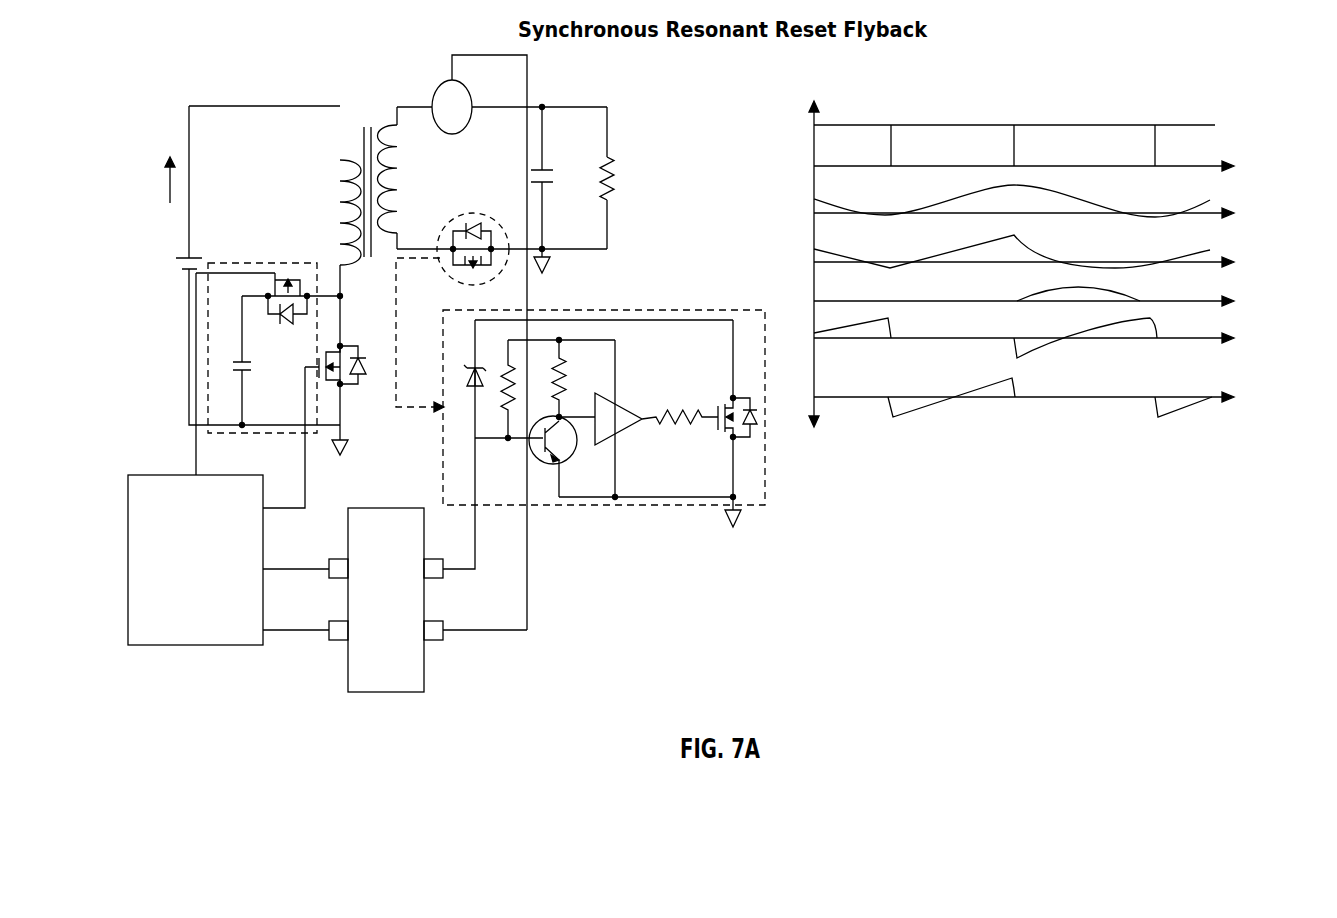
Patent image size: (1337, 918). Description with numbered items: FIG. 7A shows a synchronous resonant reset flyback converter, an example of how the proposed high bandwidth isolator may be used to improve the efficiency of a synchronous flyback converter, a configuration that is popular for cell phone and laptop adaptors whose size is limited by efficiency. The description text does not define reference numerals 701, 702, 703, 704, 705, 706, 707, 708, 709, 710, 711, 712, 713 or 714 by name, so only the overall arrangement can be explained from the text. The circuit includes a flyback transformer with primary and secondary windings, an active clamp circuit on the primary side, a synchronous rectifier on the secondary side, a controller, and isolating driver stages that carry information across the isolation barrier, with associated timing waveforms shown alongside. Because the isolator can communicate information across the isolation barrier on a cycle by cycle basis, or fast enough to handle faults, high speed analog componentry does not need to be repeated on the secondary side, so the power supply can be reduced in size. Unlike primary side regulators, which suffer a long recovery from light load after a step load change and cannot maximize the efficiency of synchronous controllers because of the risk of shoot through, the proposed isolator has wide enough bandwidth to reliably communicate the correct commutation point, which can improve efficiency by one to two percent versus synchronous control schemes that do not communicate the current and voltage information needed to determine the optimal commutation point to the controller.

The input voltage source loop 701 is at (239, 290).
The primary winding 702 is at (335, 274).
The secondary winding 703 is at (397, 178).
The transformer core 704 is at (369, 202).
The active clamp circuit 705 is at (282, 358).
The clamp capacitor 706 is at (230, 360).
The current sensor 707 is at (502, 342).
The synchronous rectifier switch 708 is at (501, 259).
The output capacitor 709 is at (542, 190).
The load resistor 710 is at (610, 178).
The synchronous rectifier 711 is at (605, 424).
The controller 712 is at (195, 560).
The level/driver stage 713 is at (395, 619).
The timing waveforms 714 is at (1039, 281).